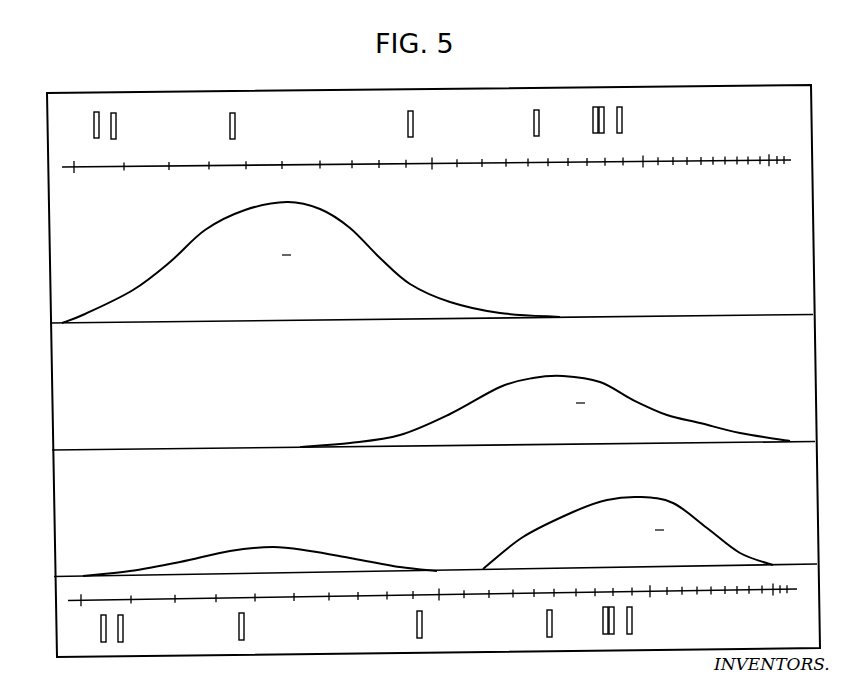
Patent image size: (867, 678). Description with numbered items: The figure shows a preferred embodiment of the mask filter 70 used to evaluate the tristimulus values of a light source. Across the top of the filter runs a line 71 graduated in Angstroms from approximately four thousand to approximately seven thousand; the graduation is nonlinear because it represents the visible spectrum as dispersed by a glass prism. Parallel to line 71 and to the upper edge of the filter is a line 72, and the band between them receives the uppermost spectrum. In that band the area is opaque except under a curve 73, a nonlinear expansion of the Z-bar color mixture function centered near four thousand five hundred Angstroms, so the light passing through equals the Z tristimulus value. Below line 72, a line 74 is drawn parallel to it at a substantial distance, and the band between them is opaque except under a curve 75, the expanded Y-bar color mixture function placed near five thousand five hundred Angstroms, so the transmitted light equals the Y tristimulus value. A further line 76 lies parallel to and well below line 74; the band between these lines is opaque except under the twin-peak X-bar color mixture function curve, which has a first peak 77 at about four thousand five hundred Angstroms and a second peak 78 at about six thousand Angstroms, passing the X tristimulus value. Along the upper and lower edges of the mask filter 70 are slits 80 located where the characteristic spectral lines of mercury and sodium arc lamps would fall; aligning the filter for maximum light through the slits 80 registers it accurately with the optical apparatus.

The mask filter 70 is at (72, 60).
The line graduated in Angstroms 71 is at (63, 168).
The line 72 is at (63, 322).
The Z color mixture function curve 73 is at (368, 248).
The line 74 is at (79, 450).
The Y color mixture function curve 75 is at (612, 385).
The line 76 is at (73, 575).
The first peak of X color mixture function curve 77 is at (298, 547).
The second peak of X color mixture function curve 78 is at (661, 500).
The slits 80 is at (232, 121).